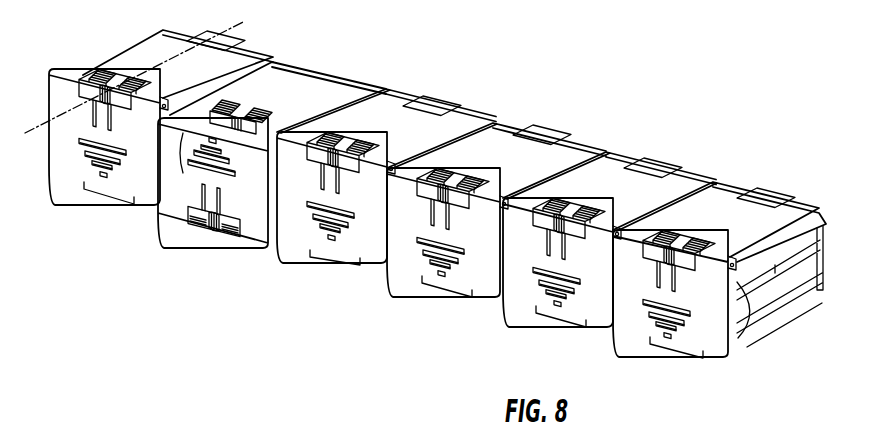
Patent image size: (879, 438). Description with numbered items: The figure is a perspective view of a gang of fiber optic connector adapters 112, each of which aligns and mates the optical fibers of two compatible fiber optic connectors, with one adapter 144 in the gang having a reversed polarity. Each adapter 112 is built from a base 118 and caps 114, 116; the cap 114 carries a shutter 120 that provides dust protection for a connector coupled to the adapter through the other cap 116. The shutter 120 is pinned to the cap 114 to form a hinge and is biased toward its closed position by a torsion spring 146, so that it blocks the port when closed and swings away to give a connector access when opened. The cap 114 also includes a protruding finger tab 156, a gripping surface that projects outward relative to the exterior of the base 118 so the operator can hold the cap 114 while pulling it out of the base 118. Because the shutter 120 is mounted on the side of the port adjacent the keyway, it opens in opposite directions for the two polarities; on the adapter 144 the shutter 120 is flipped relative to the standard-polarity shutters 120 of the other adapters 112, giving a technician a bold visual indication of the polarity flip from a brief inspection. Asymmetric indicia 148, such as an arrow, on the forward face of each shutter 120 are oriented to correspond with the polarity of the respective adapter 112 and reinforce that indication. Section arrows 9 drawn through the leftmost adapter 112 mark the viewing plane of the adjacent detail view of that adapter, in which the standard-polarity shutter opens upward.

The section line 9- 9 is at (245, 21).
The fiber optic connector adapter 112 is at (382, 203).
The cap 114 is at (667, 346).
The cap 116 is at (767, 200).
The base 118 is at (597, 170).
The shutter 120 is at (712, 330).
The adapter 144 is at (198, 236).
The torsion spring 146 is at (678, 250).
The indicia 148 is at (130, 148).
The protruding finger tab 156 is at (670, 228).